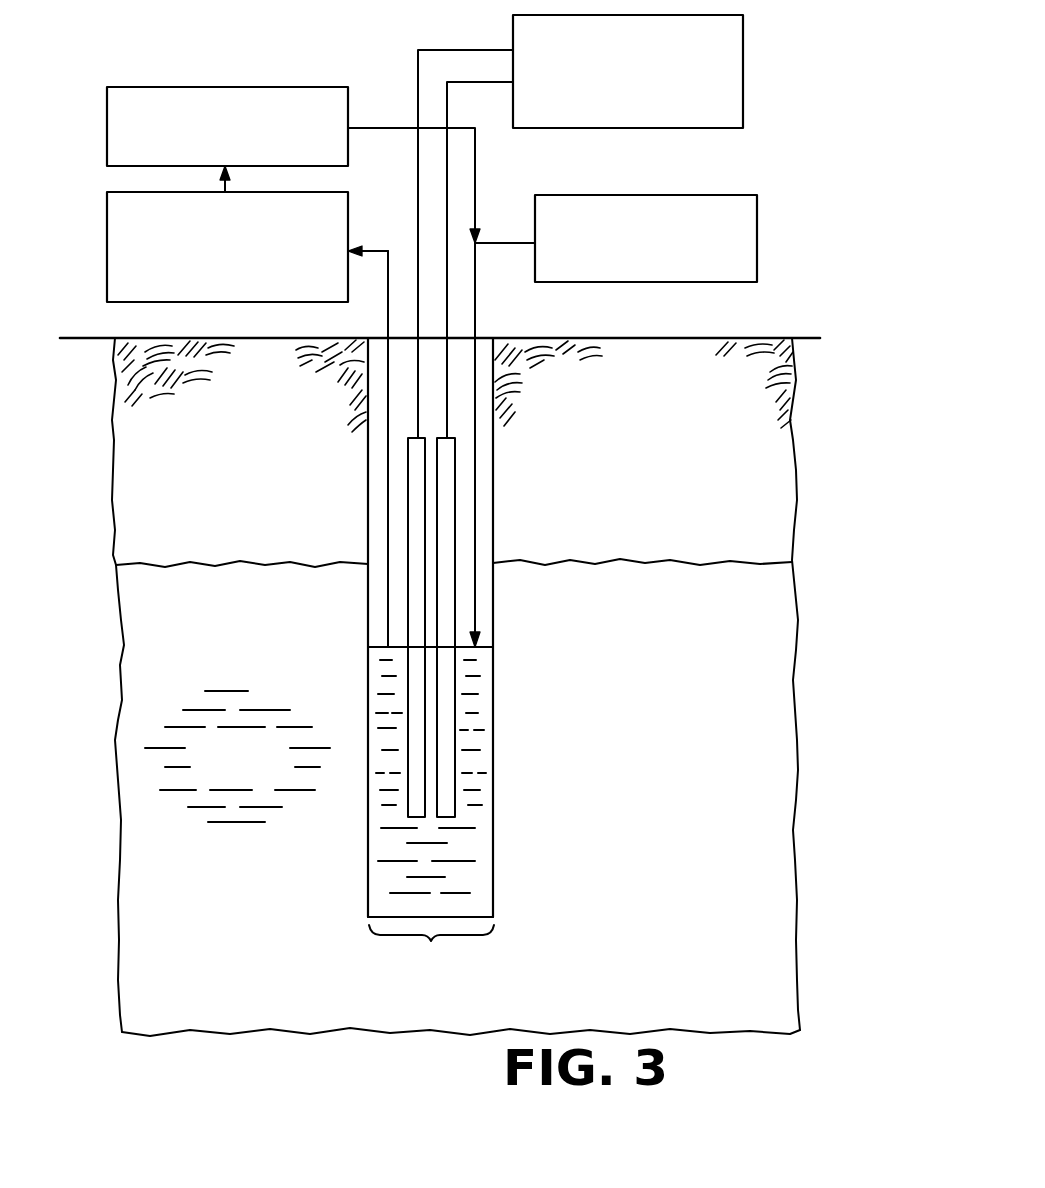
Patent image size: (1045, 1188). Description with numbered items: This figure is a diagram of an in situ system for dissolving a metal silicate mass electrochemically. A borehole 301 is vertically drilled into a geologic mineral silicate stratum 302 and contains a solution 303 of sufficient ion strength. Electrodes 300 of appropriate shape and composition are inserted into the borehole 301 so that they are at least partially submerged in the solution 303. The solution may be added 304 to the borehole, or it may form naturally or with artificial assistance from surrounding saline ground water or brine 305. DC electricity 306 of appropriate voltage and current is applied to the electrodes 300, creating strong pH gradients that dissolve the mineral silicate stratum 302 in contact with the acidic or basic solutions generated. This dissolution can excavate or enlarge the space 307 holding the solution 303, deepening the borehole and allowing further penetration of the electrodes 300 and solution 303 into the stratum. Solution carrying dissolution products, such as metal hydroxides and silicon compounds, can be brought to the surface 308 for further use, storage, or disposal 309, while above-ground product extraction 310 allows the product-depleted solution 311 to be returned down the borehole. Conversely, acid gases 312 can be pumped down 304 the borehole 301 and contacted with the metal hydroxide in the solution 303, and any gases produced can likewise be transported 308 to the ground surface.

The electrodes 300 is at (438, 543).
The borehole 301 is at (493, 522).
The geologic mineral silicate stratum 302 is at (698, 821).
The solution 303 is at (460, 862).
The solution addition 304 is at (475, 315).
The saline ground water or brine 305 is at (265, 770).
The DC electricity 306 is at (671, 130).
The space 307 is at (431, 958).
The transport to the surface 308 is at (393, 255).
The further use, storage, or disposal 309 is at (107, 228).
The product extraction 310 is at (107, 108).
The product-depleted solution return 311 is at (370, 125).
The acid gases 312 is at (556, 195).